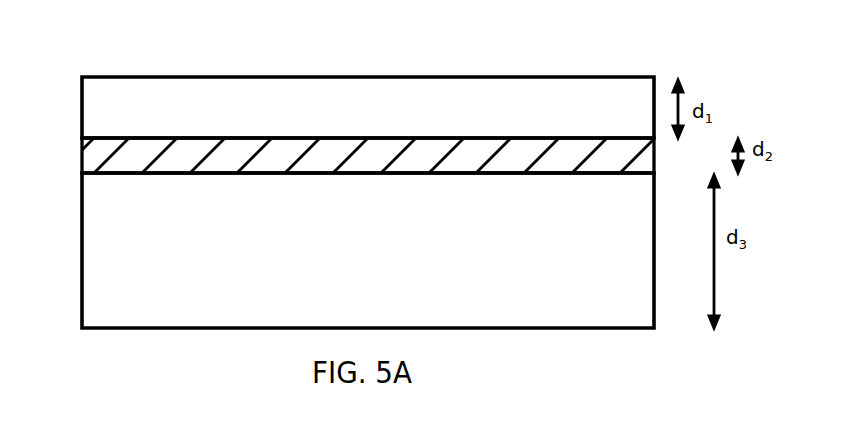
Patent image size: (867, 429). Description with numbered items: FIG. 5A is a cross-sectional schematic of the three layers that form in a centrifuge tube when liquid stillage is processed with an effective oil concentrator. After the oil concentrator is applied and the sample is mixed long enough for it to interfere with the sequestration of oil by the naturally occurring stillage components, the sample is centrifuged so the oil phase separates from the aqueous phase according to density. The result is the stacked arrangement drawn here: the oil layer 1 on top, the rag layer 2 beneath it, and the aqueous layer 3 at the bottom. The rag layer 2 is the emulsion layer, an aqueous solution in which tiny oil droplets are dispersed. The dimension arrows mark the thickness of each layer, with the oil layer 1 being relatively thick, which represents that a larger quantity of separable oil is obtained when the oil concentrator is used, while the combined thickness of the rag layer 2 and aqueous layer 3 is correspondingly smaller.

The oil layer 1 is at (140, 102).
The rag layer 2 is at (198, 153).
The aqueous layer 3 is at (212, 261).